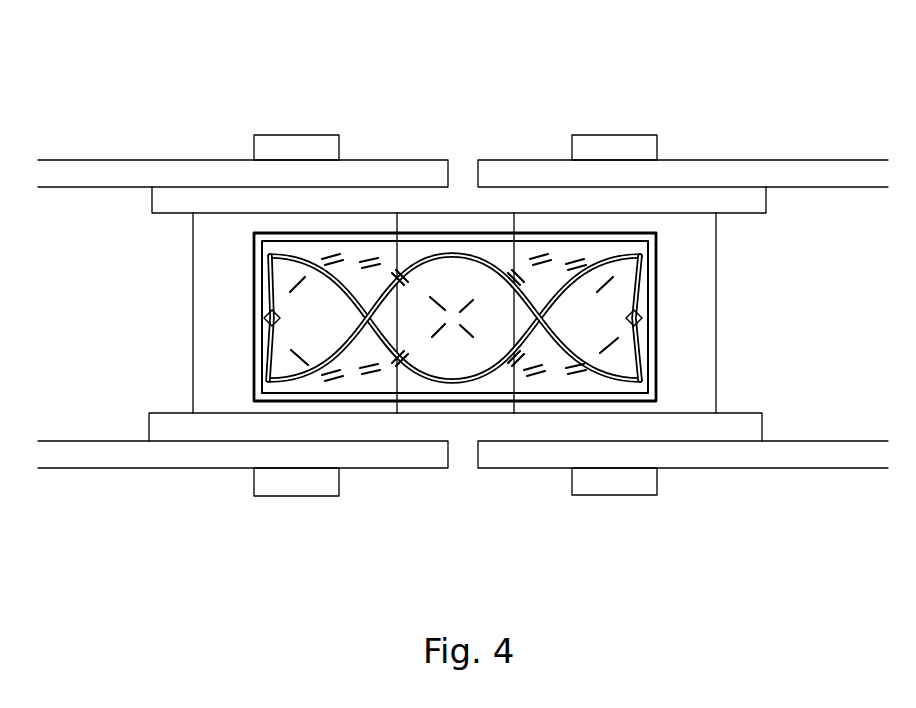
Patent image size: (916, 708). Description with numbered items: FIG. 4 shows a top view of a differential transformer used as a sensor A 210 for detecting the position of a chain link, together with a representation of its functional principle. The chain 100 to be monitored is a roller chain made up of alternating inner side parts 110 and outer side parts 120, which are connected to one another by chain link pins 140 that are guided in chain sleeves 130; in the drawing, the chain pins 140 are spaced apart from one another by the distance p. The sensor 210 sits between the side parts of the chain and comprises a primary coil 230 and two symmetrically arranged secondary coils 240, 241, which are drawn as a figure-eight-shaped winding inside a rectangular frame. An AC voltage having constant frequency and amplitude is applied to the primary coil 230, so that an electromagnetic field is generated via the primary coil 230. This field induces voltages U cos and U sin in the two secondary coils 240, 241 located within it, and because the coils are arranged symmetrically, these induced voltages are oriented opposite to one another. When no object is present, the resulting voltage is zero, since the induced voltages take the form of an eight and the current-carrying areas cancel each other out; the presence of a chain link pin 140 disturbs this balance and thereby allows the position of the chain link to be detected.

The chain 100 is at (375, 95).
The inner side part 110 is at (170, 207).
The outer side part 120 is at (100, 170).
The chain sleeve 130 is at (193, 375).
The chain link pin 140 is at (298, 145).
The sensor A 210 is at (468, 222).
The primary coil 230 is at (260, 322).
The secondary coil 240 is at (287, 282).
The secondary coil 241 is at (653, 299).